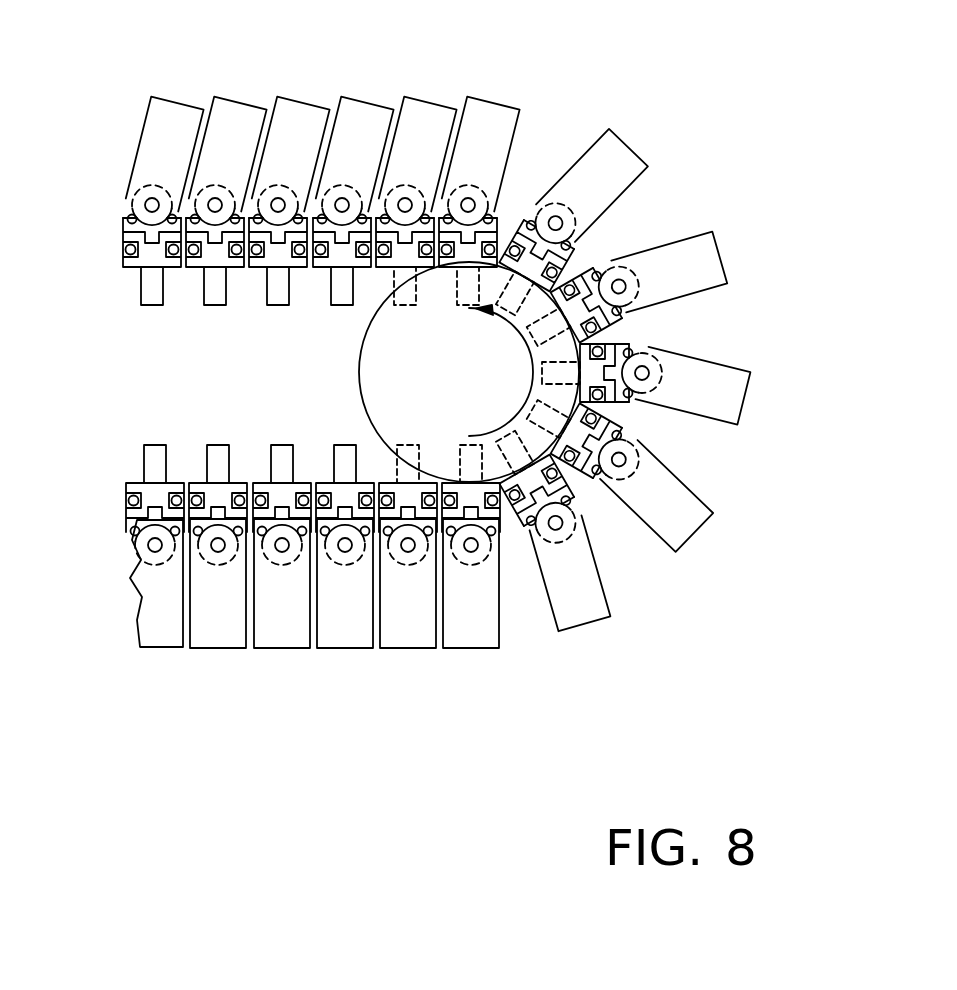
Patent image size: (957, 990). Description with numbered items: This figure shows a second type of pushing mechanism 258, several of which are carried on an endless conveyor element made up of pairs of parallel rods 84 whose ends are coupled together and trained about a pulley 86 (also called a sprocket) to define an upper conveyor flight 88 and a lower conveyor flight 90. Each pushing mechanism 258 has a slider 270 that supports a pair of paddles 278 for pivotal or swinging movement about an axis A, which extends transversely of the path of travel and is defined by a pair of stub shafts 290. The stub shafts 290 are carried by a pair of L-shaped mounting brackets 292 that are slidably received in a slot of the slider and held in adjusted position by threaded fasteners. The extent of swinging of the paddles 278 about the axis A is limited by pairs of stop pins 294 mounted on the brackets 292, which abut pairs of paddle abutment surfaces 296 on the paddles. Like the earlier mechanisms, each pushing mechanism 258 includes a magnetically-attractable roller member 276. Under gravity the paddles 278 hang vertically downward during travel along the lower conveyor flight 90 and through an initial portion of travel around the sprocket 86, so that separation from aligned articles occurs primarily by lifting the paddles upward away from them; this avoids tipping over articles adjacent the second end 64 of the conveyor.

The second end 64 is at (606, 92).
The parallel rods 84 is at (174, 256).
The pulley 86 is at (348, 364).
The upper conveyor flight 88 is at (100, 190).
The lower conveyor flight 90 is at (126, 661).
The pushing mechanism 258 is at (304, 302).
The slider 270 is at (170, 486).
The magnetically-attractable roller member 276 is at (336, 483).
The paddle 278 is at (290, 105).
The stub shaft 290 is at (155, 553).
The L-shaped mounting bracket 292 is at (137, 528).
The stop pin 294 is at (346, 553).
The paddle abutment surface 296 is at (281, 553).
The axis A is at (342, 200).